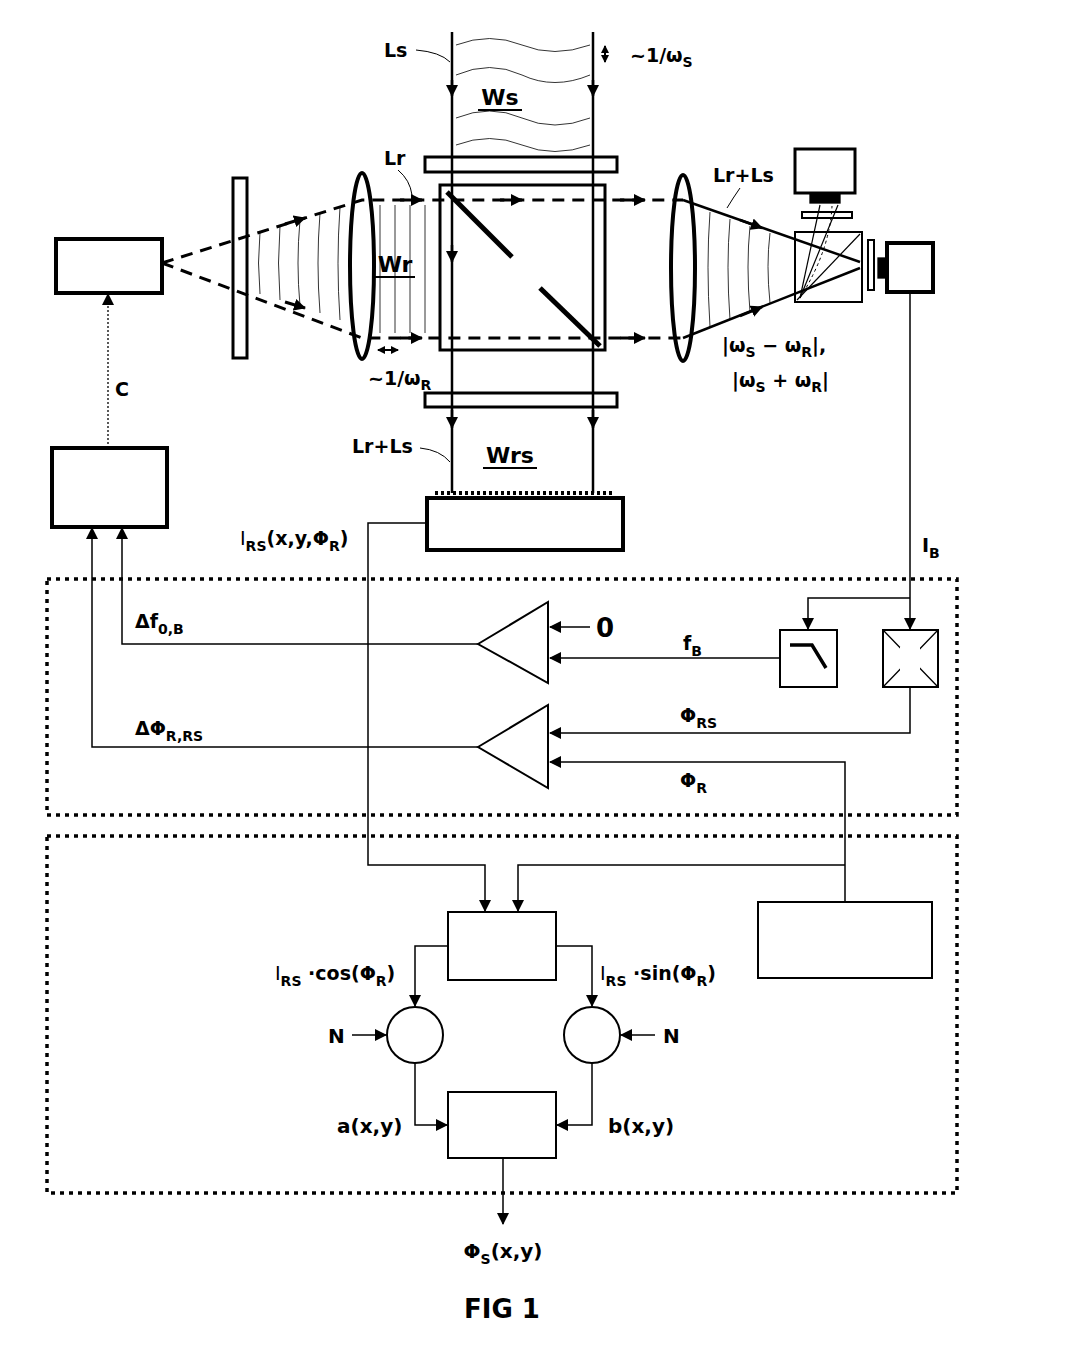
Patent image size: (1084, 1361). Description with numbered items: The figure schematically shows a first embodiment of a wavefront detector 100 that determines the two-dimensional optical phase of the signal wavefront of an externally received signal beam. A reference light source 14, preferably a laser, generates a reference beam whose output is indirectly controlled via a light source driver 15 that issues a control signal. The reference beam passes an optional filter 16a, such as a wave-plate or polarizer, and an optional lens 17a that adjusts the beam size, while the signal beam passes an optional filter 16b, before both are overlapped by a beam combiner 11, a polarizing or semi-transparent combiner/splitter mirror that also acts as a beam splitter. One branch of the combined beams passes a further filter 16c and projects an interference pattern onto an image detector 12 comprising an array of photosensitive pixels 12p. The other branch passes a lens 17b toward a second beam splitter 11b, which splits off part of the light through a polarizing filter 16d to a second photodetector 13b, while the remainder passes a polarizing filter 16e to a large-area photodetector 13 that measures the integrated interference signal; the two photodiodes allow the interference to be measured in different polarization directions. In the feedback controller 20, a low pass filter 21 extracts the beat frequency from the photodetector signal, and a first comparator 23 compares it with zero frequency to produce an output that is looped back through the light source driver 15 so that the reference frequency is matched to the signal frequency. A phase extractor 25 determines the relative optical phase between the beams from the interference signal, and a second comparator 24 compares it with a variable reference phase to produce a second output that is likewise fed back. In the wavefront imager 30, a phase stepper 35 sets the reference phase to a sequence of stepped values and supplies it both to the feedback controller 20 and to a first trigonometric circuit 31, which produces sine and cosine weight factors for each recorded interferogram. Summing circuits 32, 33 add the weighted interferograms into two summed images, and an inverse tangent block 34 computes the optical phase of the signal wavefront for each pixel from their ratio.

The wavefront detector 100 is at (197, 112).
The beam combiner 11 is at (508, 277).
The second beam splitter 11b is at (848, 307).
The image detector 12 is at (510, 537).
The photosensitive pixels 12p is at (600, 490).
The photodetector 13 is at (897, 280).
The second photodetector 13b is at (812, 181).
The reference light source 14 is at (94, 279).
The light source driver 15 is at (94, 501).
The filter 16a is at (240, 177).
The filter 16b is at (620, 165).
The filter 16c is at (622, 401).
The polarizing filter 16d is at (855, 216).
The polarizing filter 16e is at (878, 240).
The lens 17a is at (360, 172).
The lens 17b is at (684, 173).
The feedback controller 20 is at (96, 805).
The low pass filter 21 is at (772, 642).
The first comparator 23 is at (490, 630).
The second comparator 24 is at (490, 733).
The phase extractor 25 is at (926, 698).
The wavefront imager 30 is at (96, 1180).
The first trigonometric circuit 31 is at (440, 921).
The summing circuit 32 is at (452, 1037).
The summing circuit 33 is at (553, 1037).
The inverse tangent block 34 is at (562, 1160).
The phase stepper 35 is at (862, 988).